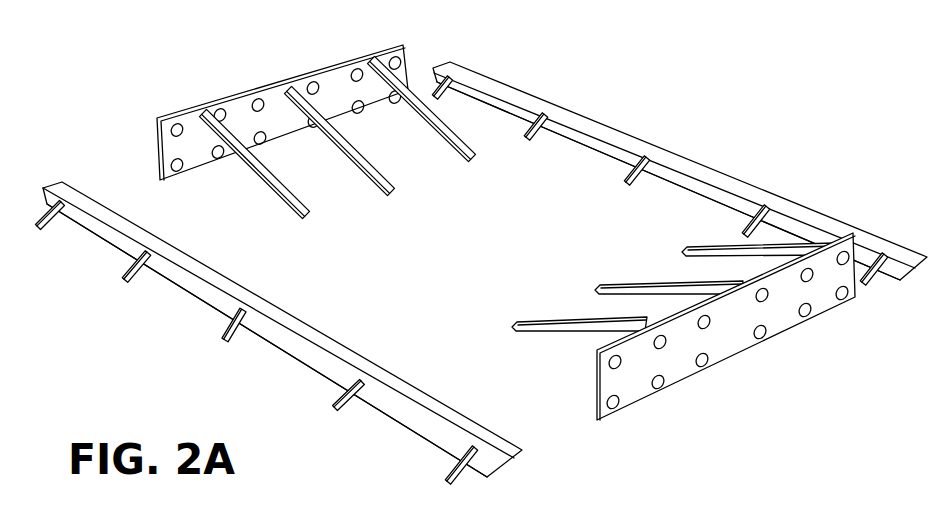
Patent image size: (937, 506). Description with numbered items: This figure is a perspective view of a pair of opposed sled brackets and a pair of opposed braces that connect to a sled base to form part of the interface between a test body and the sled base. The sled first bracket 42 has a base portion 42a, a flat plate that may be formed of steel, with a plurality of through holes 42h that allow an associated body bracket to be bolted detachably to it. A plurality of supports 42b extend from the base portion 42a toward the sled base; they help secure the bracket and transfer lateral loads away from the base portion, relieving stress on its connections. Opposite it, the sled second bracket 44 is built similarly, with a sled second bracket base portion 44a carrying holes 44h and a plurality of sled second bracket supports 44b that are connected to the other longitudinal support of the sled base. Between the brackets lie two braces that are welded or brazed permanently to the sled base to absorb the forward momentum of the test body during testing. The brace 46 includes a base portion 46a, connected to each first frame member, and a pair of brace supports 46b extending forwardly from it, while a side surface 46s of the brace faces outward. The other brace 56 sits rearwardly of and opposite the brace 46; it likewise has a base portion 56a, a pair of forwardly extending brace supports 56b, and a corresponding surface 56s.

The sled first bracket 42 is at (693, 353).
The base portion 42a is at (636, 389).
The supports 42b is at (630, 283).
The through holes 42h is at (665, 389).
The sled second bracket 44 is at (316, 121).
The sled second bracket base portion 44a is at (277, 84).
The sled second bracket supports 44b is at (342, 148).
The holes of second side plate 44h is at (254, 101).
The brace 46 is at (266, 304).
The base portion 46a is at (71, 191).
The brace supports 46b is at (43, 189).
The side surface of first rail 46s is at (292, 351).
The brace 56 is at (679, 148).
The base portion 56a is at (502, 84).
The brace supports 56b is at (542, 126).
The side surface of second rail 56s is at (516, 105).